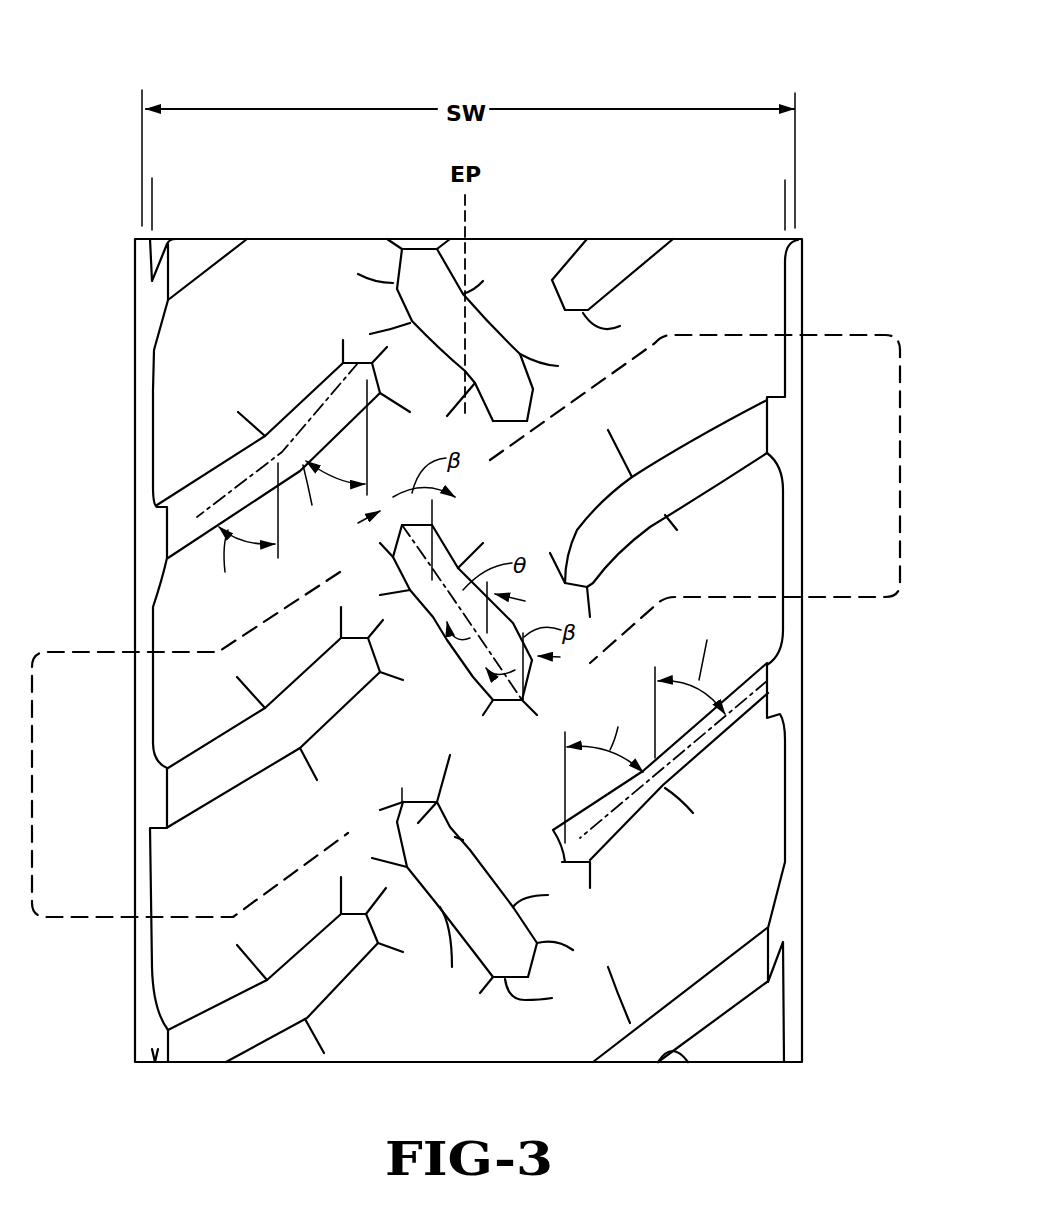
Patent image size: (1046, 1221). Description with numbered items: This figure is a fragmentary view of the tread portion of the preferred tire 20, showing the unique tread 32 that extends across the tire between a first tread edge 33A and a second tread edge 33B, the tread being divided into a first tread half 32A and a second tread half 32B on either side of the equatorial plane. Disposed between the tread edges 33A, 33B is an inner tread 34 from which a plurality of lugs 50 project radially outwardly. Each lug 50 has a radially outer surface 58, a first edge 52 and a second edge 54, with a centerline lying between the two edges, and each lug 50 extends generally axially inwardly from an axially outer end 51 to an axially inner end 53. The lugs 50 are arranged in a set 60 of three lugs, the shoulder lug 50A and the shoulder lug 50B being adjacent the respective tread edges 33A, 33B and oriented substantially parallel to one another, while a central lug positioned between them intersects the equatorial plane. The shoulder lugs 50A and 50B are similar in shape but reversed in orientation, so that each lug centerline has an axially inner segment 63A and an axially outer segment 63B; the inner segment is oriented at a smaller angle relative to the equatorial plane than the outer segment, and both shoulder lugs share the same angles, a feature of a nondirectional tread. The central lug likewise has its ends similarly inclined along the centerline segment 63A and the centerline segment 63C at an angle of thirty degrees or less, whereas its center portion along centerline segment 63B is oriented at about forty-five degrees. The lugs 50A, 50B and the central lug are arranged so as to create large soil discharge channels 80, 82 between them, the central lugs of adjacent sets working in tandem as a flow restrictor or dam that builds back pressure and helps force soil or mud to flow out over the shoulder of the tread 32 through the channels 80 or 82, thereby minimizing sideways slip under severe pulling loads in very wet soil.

The tire 20 is at (117, 131).
The tread 32 is at (719, 568).
The first tread half 32A is at (341, 266).
The second tread half 32B is at (513, 326).
The first tread edge 33A is at (152, 198).
The second tread edge 33B is at (783, 202).
The inner tread 34 is at (733, 843).
The lug 50 is at (423, 786).
The shoulder lug 50A is at (180, 537).
The shoulder lug 50B is at (760, 692).
The axially outer end 51 is at (350, 352).
The first edge 52 is at (490, 975).
The axially inner end 53 is at (182, 833).
The second edge 54 is at (448, 826).
The radially outer surface 58 is at (202, 492).
The set 60 is at (845, 332).
The axially inner segment 63A is at (312, 422).
The axially outer segment 63B is at (230, 487).
The centerline segment 63C is at (438, 801).
The soil discharge channel 80 is at (222, 618).
The soil discharge channel 82 is at (757, 801).